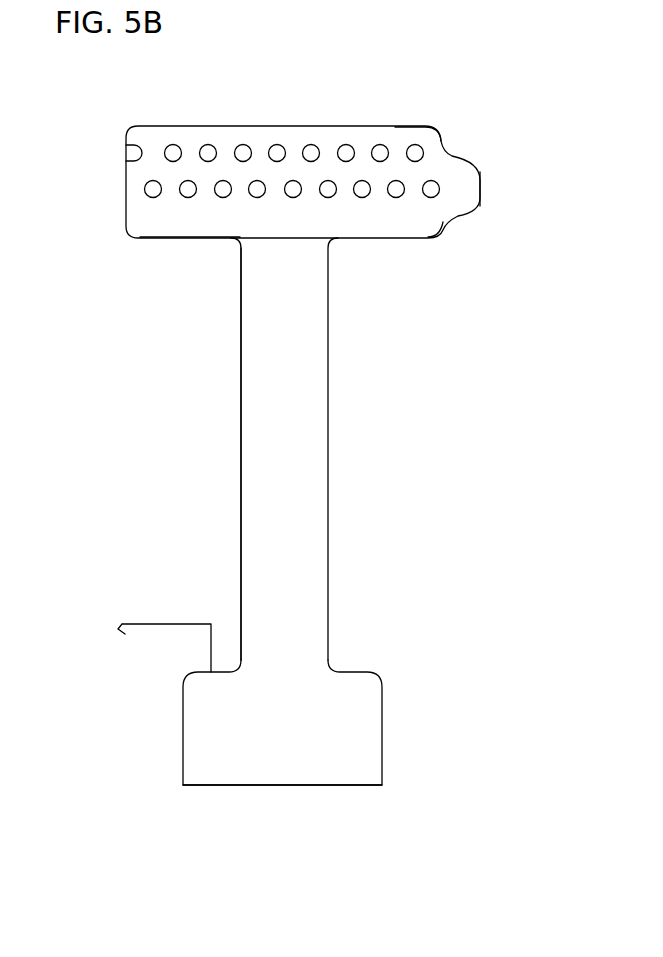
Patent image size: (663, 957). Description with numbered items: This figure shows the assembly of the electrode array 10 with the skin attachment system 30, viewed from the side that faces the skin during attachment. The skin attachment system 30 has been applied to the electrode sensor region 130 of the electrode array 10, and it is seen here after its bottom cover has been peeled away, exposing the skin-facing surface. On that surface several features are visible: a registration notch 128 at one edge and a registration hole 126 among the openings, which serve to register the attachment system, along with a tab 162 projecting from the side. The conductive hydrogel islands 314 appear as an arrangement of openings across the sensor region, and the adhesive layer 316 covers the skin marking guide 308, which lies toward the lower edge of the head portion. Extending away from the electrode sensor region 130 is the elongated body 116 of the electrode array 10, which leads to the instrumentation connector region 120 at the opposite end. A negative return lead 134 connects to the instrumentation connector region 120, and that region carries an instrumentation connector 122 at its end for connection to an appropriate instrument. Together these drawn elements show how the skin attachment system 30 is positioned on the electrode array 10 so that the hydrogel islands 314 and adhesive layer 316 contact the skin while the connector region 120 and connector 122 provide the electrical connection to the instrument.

The electrode array 10 is at (186, 436).
The skin attachment system 30 is at (284, 127).
The elongated body 116 is at (328, 468).
The instrumentation connector region 120 is at (345, 725).
The instrumentation connector 122 is at (293, 786).
The registration hole 126 is at (436, 186).
The registration notch 128 is at (128, 153).
The electrode sensor region 130 is at (178, 241).
The negative return lead 134 is at (170, 624).
The tab 162 is at (482, 186).
The skin marking guide 308 is at (422, 222).
The conductive hydrogel islands 314 is at (349, 150).
The adhesive layer 316 is at (415, 135).